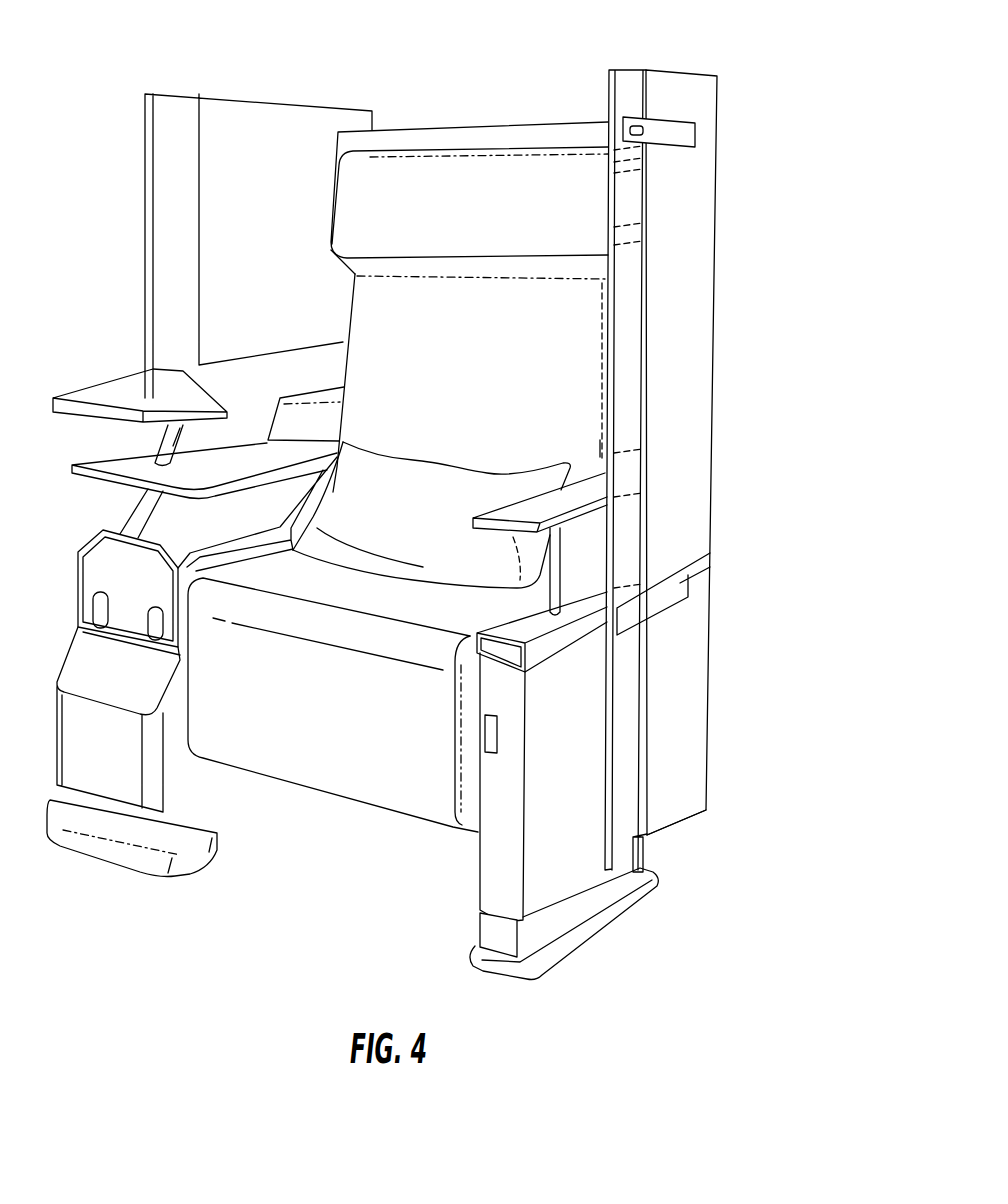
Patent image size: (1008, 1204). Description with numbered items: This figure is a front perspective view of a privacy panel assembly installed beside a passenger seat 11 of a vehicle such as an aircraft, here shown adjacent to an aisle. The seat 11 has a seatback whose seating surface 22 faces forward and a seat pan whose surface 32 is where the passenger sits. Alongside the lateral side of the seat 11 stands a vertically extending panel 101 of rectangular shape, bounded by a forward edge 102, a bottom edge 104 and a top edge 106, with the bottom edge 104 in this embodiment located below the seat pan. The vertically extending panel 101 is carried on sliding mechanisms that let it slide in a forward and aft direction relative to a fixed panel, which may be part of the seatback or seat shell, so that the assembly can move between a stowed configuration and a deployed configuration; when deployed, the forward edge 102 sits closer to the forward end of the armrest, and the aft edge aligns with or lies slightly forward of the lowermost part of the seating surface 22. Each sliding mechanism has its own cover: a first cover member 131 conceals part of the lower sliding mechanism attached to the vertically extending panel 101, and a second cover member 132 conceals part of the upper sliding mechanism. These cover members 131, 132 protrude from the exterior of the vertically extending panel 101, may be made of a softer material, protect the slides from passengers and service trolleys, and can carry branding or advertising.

The passenger seat 11 is at (350, 780).
The seating surface 22 is at (475, 364).
The surface 32 is at (350, 598).
The vertically extending panel 101 is at (695, 223).
The forward edge 102 is at (607, 200).
The bottom edge 104 is at (673, 825).
The top edge 106 is at (627, 70).
The first cover member 131 is at (650, 610).
The second cover member 132 is at (662, 130).